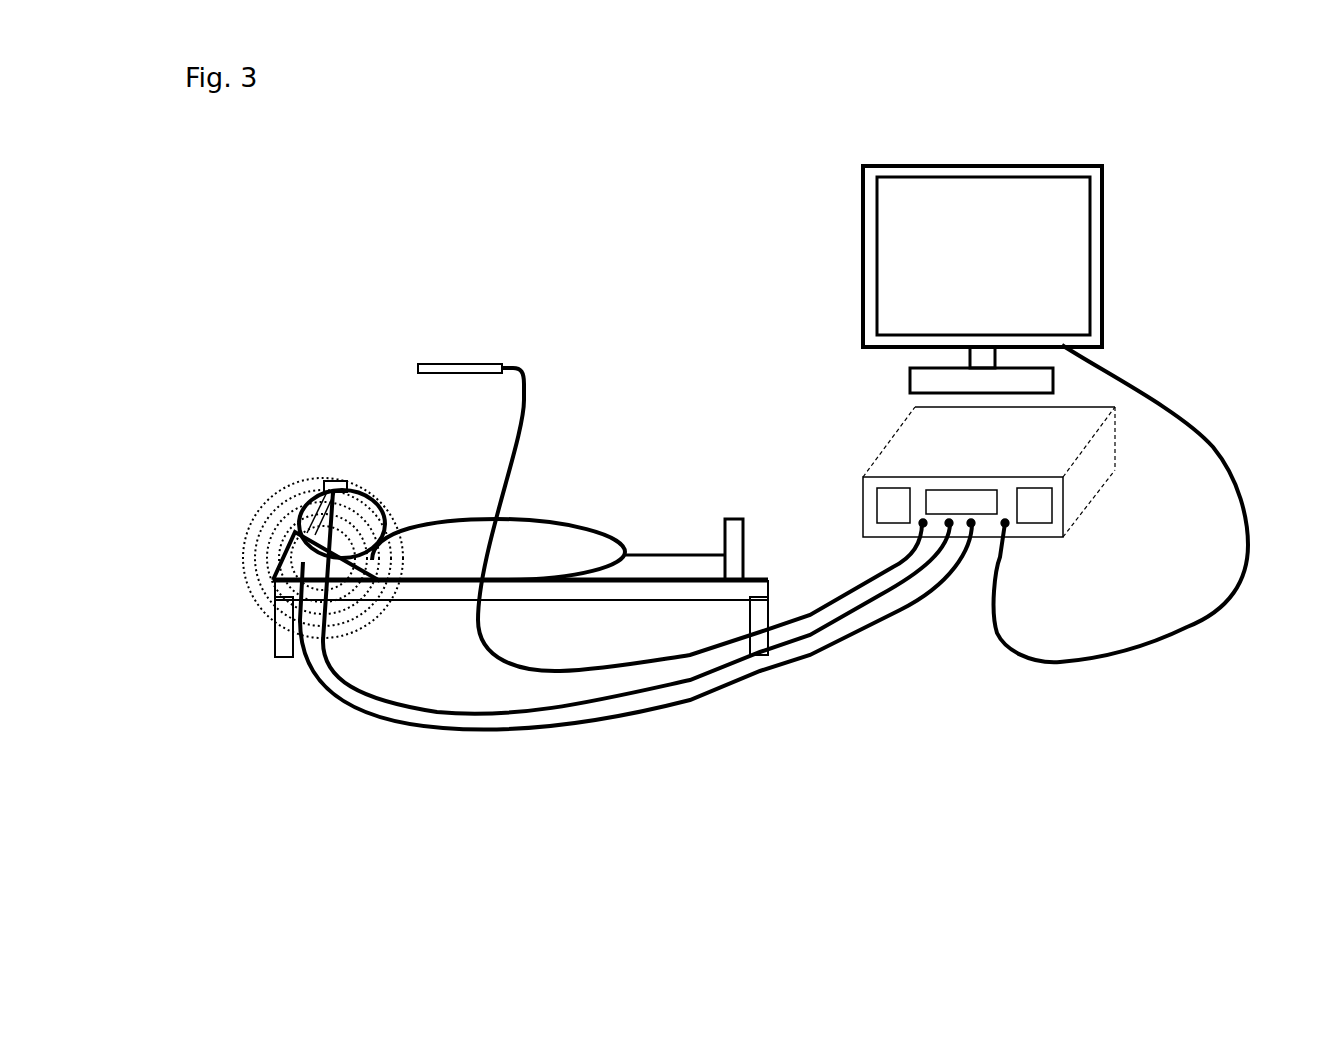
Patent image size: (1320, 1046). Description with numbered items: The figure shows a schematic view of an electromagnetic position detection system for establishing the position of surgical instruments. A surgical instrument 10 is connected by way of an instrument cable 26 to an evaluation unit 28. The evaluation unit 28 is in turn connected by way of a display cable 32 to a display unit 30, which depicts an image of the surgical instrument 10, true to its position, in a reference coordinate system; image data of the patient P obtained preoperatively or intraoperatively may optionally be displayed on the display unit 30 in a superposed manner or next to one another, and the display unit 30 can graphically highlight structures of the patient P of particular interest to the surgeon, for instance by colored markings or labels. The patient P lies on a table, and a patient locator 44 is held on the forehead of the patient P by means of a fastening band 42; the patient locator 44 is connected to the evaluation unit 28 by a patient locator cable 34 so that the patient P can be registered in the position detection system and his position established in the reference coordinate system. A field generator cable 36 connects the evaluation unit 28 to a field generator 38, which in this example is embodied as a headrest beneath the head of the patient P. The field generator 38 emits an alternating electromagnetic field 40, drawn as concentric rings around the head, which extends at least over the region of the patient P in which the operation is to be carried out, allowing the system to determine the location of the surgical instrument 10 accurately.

The surgical instrument 10 is at (460, 367).
The instrument cable 26 is at (525, 390).
The evaluation unit 28 is at (908, 457).
The display unit 30 is at (908, 303).
The display cable 32 is at (1053, 660).
The patient locator cable 34 is at (712, 670).
The field generator cable 36 is at (618, 718).
The field generator 38 is at (292, 553).
The alternating electromagnetic field 40 is at (285, 535).
The fastening band 42 is at (287, 517).
The patient locator 44 is at (335, 481).
The patient P is at (435, 540).